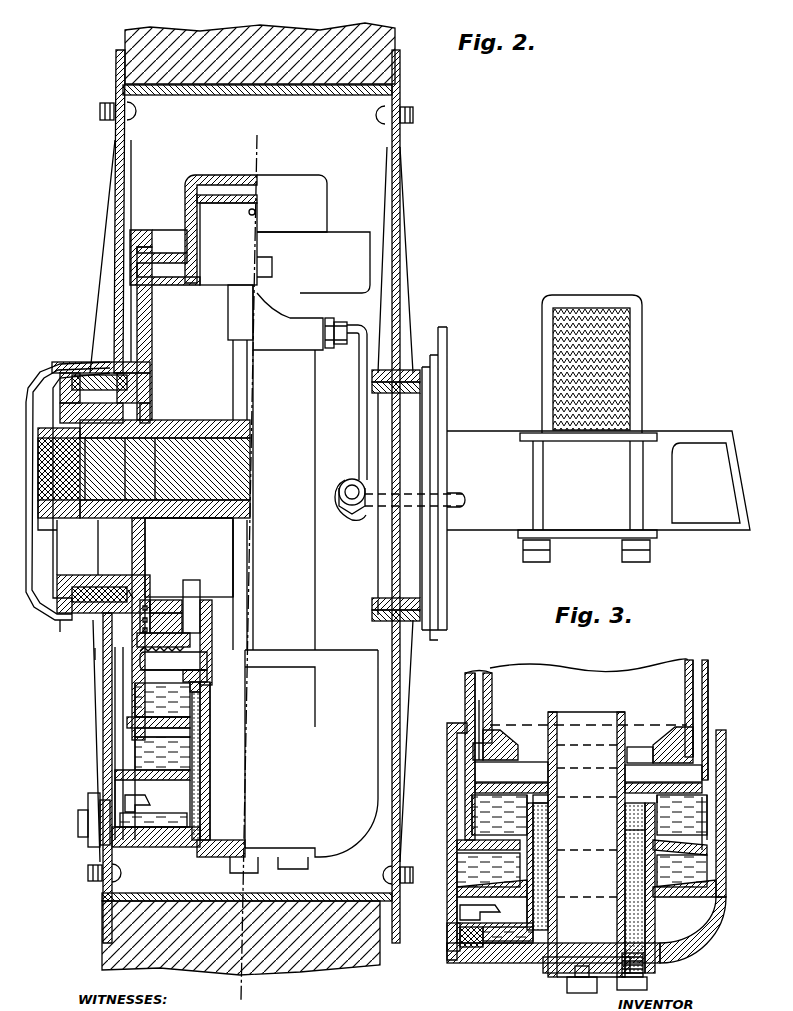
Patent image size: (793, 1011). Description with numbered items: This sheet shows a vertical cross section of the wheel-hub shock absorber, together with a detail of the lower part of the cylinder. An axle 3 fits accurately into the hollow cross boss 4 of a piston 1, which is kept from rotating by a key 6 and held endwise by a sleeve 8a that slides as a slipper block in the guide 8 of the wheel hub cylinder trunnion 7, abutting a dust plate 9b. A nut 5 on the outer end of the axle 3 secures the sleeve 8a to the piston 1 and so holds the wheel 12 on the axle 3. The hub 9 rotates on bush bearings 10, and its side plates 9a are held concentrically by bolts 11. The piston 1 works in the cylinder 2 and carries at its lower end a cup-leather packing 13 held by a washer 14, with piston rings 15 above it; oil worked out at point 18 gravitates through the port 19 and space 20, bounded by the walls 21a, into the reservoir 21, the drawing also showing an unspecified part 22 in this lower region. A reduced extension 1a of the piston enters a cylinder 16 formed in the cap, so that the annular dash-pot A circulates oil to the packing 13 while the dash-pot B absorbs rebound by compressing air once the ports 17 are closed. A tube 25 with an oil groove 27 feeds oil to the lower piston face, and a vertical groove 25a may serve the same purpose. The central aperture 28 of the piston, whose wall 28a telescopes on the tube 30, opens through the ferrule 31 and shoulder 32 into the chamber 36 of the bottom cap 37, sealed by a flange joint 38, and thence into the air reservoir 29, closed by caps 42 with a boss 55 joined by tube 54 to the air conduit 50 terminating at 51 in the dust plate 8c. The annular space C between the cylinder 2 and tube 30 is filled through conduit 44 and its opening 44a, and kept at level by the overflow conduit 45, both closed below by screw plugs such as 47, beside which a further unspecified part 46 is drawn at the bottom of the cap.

In FIG. 2, the piston 1 is at (152, 337).
In FIG. 3, the piston 1 is at (684, 688).
In FIG. 2, the piston extension 1a is at (195, 255).
In FIG. 2, the cylinder 2 is at (152, 361).
In FIG. 3, the cylinder 2 is at (709, 677).
In FIG. 2, the axle 3 is at (216, 526).
In FIG. 2, the hollow cross boss 4 is at (186, 526).
In FIG. 2, the nut 5 is at (80, 520).
In FIG. 2, the key 6 is at (177, 420).
In FIG. 2, the trunnion 7 is at (88, 364).
In FIG. 2, the guide 8 is at (95, 578).
In FIG. 2, the sleeve 8a is at (110, 523).
In FIG. 2, the dust plate 8c is at (432, 636).
In FIG. 2, the hub 9 is at (312, 95).
In FIG. 2, the side plate 9a is at (104, 746).
In FIG. 2, the dust plate 9b is at (446, 560).
In FIG. 2, the bush bearing 10 is at (60, 625).
In FIG. 2, the bolt 11 is at (415, 118).
In FIG. 2, the wheel 12 is at (362, 42).
In FIG. 2, the packing 13 is at (173, 661).
In FIG. 3, the packing 13 is at (663, 773).
In FIG. 2, the washer 14 is at (172, 662).
In FIG. 3, the washer 14 is at (497, 777).
In FIG. 2, the piston ring 15 is at (161, 614).
In FIG. 2, the cylinder 16 is at (185, 194).
In FIG. 2, the port 17 is at (249, 213).
In FIG. 2, the point 18 is at (130, 590).
In FIG. 2, the port 19 is at (376, 612).
In FIG. 2, the space 20 is at (122, 692).
In FIG. 3, the space 20 is at (458, 810).
In FIG. 2, the reservoir 21 is at (150, 772).
In FIG. 3, the reservoir 21 is at (700, 897).
In FIG. 3, the reservoir wall 21a is at (727, 785).
In FIG. 2, the partition 22 is at (192, 730).
In FIG. 3, the partition 22 is at (710, 858).
In FIG. 2, the tube 25 is at (237, 372).
In FIG. 3, the vertical groove 25a is at (477, 690).
In FIG. 2, the oil groove 27 is at (163, 632).
In FIG. 3, the oil groove 27 is at (678, 735).
In FIG. 2, the aperture 28 is at (194, 608).
In FIG. 3, the aperture 28 is at (640, 755).
In FIG. 2, the aperture wall 28a is at (188, 598).
In FIG. 3, the aperture wall 28a is at (520, 748).
In FIG. 2, the air reservoir 29 is at (284, 500).
In FIG. 2, the tube 30 is at (208, 690).
In FIG. 3, the tube 30 is at (704, 830).
In FIG. 2, the ferrule 31 is at (212, 627).
In FIG. 3, the ferrule 31 is at (586, 844).
In FIG. 2, the shoulder 32 is at (208, 668).
In FIG. 3, the shoulder 32 is at (628, 781).
In FIG. 2, the chamber 36 is at (221, 753).
In FIG. 3, the chamber 36 is at (586, 947).
In FIG. 2, the bottom cap 37 is at (311, 753).
In FIG. 2, the flange joint 38 is at (125, 722).
In FIG. 3, the flange joint 38 is at (470, 845).
In FIG. 2, the cap 42 is at (288, 317).
In FIG. 2, the filling conduit 44 is at (210, 707).
In FIG. 3, the filling conduit 44 is at (548, 812).
In FIG. 3, the opening 44a is at (520, 800).
In FIG. 3, the overflow conduit 45 is at (625, 837).
In FIG. 2, the nut 46 is at (250, 870).
In FIG. 3, the nut 46 is at (567, 989).
In FIG. 2, the screw plug 47 is at (303, 867).
In FIG. 3, the screw plug 47 is at (647, 982).
In FIG. 2, the air conduit 50 is at (378, 498).
In FIG. 2, the conduit termination 51 is at (455, 492).
In FIG. 2, the tube 54 is at (352, 433).
In FIG. 2, the boss 55 is at (318, 330).
In FIG. 2, the annular dash-pot A is at (161, 268).
In FIG. 2, the dash-pot B is at (218, 186).
In FIG. 2, the annular space C is at (130, 706).